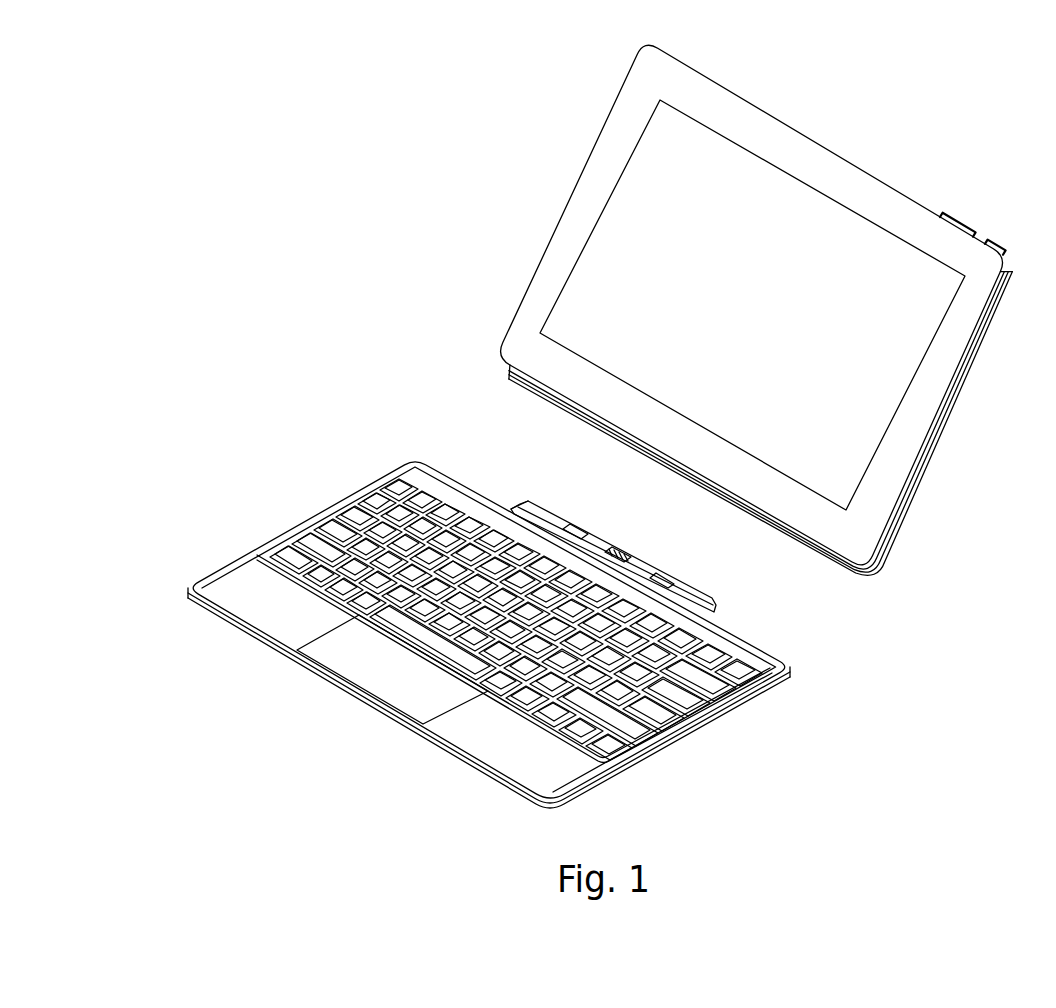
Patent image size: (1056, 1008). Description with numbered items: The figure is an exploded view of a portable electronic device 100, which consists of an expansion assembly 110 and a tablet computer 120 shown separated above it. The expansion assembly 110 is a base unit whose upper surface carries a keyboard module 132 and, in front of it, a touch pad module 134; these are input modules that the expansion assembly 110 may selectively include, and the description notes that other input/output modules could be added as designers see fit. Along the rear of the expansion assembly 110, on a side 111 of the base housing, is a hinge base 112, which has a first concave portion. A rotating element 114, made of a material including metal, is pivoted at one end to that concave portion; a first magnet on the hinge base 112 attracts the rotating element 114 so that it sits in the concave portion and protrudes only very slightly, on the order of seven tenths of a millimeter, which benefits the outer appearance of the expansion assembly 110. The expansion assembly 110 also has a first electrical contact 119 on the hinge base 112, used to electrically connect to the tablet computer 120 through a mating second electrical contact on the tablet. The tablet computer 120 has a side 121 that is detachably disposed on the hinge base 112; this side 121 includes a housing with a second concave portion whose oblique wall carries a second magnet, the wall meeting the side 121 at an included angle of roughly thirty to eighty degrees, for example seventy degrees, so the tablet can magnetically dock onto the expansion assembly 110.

The portable electronic device 100 is at (584, 426).
The expansion assembly 110 is at (507, 612).
The base housing 111 is at (752, 641).
The hinge base 112 is at (532, 500).
The rotating element 114 is at (582, 531).
The first electrical contact 119 is at (620, 547).
The tablet computer 120 is at (721, 311).
The side of the tablet computer 121 is at (712, 497).
The keyboard module 132 is at (708, 722).
The touch pad module 134 is at (392, 688).